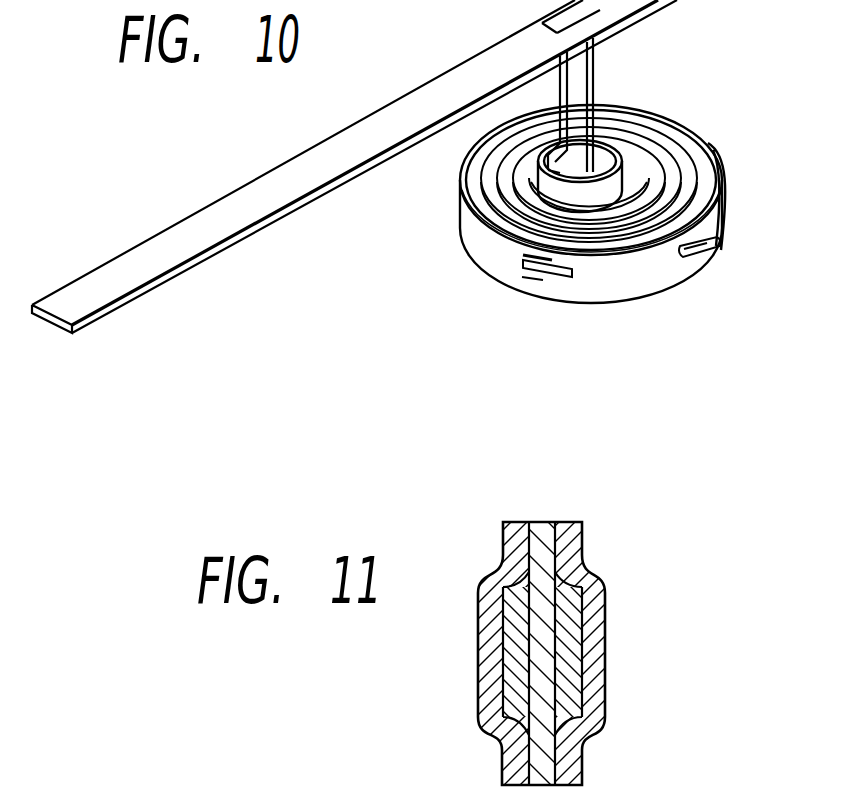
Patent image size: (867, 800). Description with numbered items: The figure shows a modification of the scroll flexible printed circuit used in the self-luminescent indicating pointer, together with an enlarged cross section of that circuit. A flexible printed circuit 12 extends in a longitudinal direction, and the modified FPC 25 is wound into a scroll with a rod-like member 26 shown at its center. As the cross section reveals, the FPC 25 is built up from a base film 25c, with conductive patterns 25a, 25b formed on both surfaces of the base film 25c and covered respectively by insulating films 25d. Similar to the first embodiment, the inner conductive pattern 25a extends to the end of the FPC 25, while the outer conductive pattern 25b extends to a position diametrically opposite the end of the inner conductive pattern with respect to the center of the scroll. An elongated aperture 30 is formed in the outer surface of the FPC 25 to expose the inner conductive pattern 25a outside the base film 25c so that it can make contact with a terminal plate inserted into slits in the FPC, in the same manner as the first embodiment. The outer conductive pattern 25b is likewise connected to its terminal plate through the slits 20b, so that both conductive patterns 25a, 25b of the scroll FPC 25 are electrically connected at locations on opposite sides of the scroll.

In FIG. 10, the flexible printed circuit 12 is at (382, 163).
In FIG. 10, the rod 26 is at (590, 80).
In FIG. 10, the flexible printed circuit 25 is at (658, 120).
In FIG. 11, the flexible printed circuit 25 is at (588, 552).
In FIG. 10, the inner conductive pattern 25a is at (698, 258).
In FIG. 11, the inner conductive pattern 25a is at (563, 653).
In FIG. 10, the outer conductive pattern 25b is at (558, 279).
In FIG. 11, the outer conductive pattern 25b is at (513, 643).
In FIG. 11, the base film 25c is at (543, 565).
In FIG. 11, the insulating film 25d is at (508, 745).
In FIG. 10, the slits 20b is at (537, 282).
In FIG. 10, the elongated aperture 30 is at (712, 262).